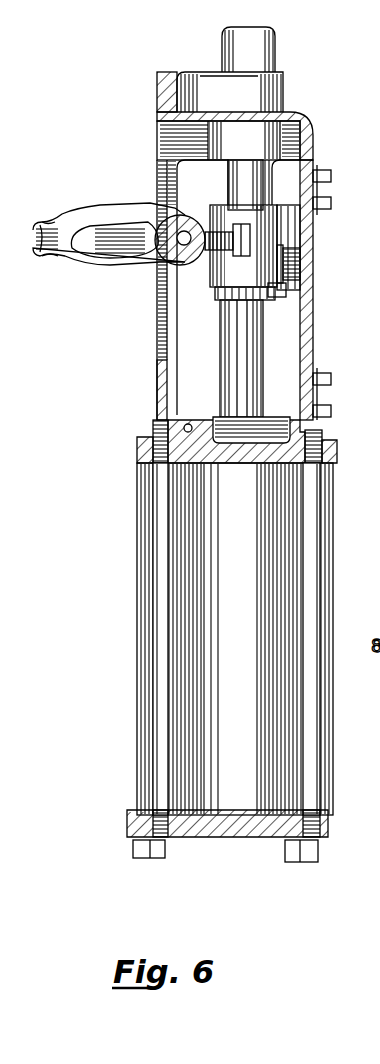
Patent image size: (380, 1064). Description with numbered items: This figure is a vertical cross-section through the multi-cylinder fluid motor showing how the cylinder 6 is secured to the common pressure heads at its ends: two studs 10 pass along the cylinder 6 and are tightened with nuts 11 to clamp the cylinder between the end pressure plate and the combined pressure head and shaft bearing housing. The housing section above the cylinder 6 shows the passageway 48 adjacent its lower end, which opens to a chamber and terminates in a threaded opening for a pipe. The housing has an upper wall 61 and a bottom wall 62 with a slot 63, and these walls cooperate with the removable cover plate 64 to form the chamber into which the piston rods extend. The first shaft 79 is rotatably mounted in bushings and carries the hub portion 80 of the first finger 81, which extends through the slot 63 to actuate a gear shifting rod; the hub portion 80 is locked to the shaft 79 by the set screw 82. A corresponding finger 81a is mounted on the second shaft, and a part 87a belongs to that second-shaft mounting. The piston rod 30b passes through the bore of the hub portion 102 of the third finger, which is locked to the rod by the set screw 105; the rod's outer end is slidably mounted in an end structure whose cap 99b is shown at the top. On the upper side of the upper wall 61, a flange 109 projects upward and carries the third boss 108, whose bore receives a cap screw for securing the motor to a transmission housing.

The cap 99b is at (268, 46).
The boss 108 is at (275, 88).
The flange 109 is at (165, 94).
The upper wall 61 is at (283, 114).
The removable cover plate 64 is at (313, 340).
The slot 63 is at (160, 304).
The bottom wall 62 is at (160, 367).
The hub portion 80 is at (206, 213).
The clamp block 87a is at (287, 237).
The first shaft 79 is at (155, 279).
The first finger 81 is at (107, 252).
The finger 81a is at (50, 222).
The set screw 105 is at (297, 257).
The hub portion 102 is at (285, 286).
The set screw 82 is at (220, 290).
The piston rod 30b is at (228, 331).
The passageway 48 is at (184, 425).
The cylinder 6 is at (180, 521).
The studs 10 is at (153, 676).
The nuts 11 is at (140, 850).